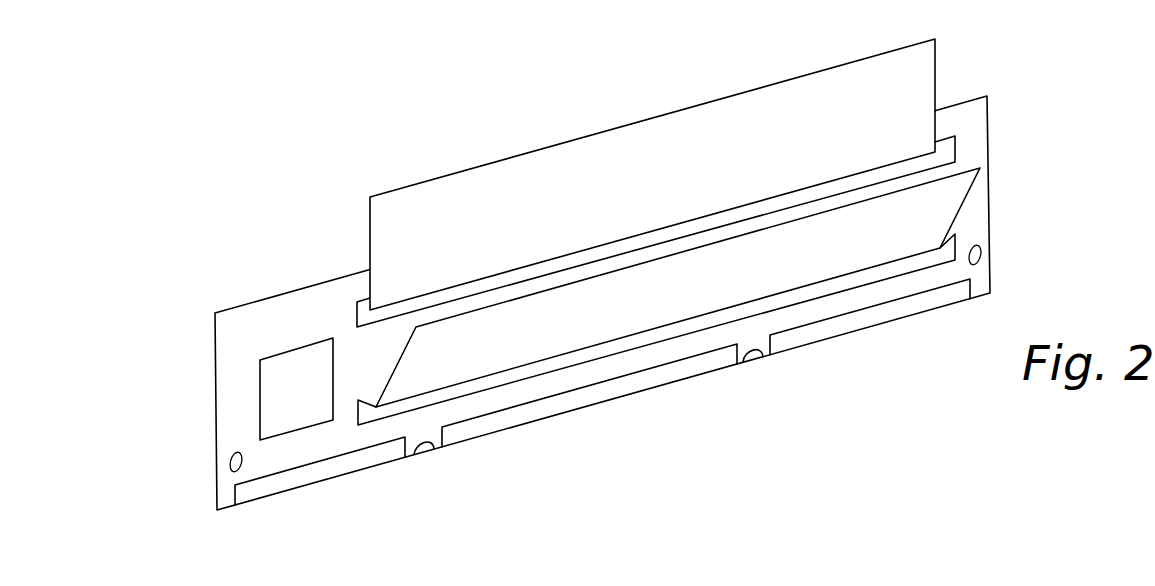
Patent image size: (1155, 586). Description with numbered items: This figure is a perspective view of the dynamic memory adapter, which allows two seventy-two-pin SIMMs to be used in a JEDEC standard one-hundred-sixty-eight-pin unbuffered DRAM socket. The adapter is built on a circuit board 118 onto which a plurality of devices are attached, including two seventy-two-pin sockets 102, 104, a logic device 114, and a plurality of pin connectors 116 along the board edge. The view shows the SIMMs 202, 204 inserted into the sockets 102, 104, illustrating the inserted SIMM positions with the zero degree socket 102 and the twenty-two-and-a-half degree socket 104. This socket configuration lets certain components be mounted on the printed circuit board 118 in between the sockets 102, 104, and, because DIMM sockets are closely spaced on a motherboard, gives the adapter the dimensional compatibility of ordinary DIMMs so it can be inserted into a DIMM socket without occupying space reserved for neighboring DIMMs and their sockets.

The 72-pin socket 102 is at (955, 147).
The 72-pin socket 104 is at (955, 245).
The logic device 114 is at (278, 354).
The pin connectors 116 is at (343, 476).
The circuit board 118 is at (323, 282).
The SIMM 202 is at (957, 210).
The SIMM 204 is at (480, 166).